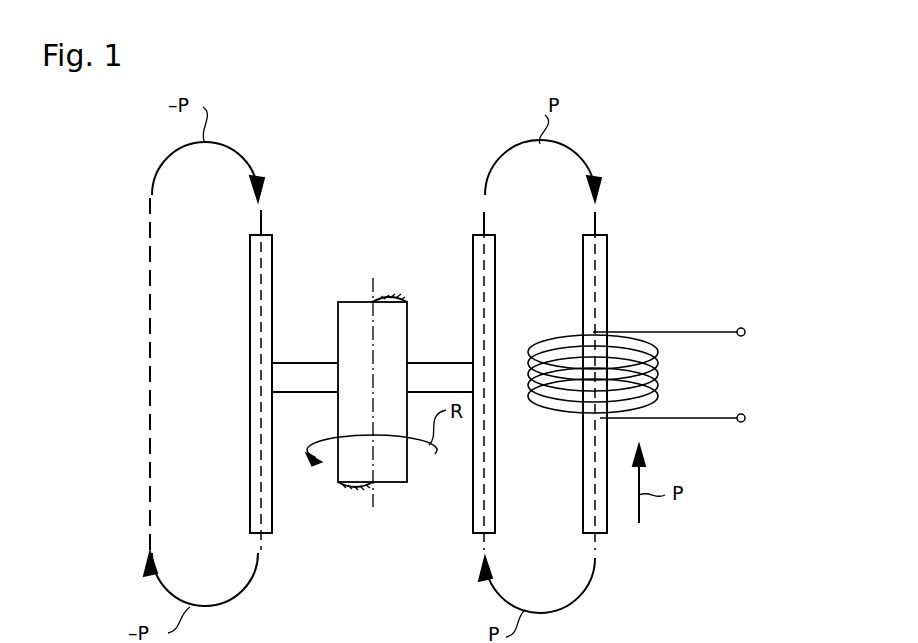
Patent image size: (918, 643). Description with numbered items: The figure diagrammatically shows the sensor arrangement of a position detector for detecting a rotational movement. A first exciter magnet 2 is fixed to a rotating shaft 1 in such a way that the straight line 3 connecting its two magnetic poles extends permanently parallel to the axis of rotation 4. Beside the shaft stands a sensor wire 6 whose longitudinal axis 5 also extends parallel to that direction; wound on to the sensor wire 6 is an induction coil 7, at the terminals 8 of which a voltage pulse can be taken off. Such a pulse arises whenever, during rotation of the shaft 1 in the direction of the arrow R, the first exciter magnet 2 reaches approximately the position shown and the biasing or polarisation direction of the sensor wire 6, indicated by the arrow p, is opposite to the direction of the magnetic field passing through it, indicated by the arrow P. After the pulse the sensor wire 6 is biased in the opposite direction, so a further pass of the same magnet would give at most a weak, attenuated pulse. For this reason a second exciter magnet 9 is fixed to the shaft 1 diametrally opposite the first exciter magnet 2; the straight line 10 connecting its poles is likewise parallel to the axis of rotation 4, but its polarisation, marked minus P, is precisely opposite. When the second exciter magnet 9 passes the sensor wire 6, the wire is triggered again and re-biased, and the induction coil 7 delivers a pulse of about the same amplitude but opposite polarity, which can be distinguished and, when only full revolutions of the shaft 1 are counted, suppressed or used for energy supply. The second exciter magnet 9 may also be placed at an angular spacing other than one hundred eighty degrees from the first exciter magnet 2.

The rotating shaft 1 is at (356, 315).
The first exciter magnet 2 is at (473, 300).
The straight line connecting the magnetic poles of the first exciter magnet 3 is at (484, 222).
The axis of rotation 4 is at (373, 507).
The longitudinal axis of the sensor wire 5 is at (600, 222).
The sensor wire 6 is at (583, 490).
The induction coil 7 is at (660, 378).
The terminals 8 is at (746, 330).
The second exciter magnet 9 is at (250, 303).
The straight line connecting the magnetic poles of the second exciter magnet 10 is at (262, 220).